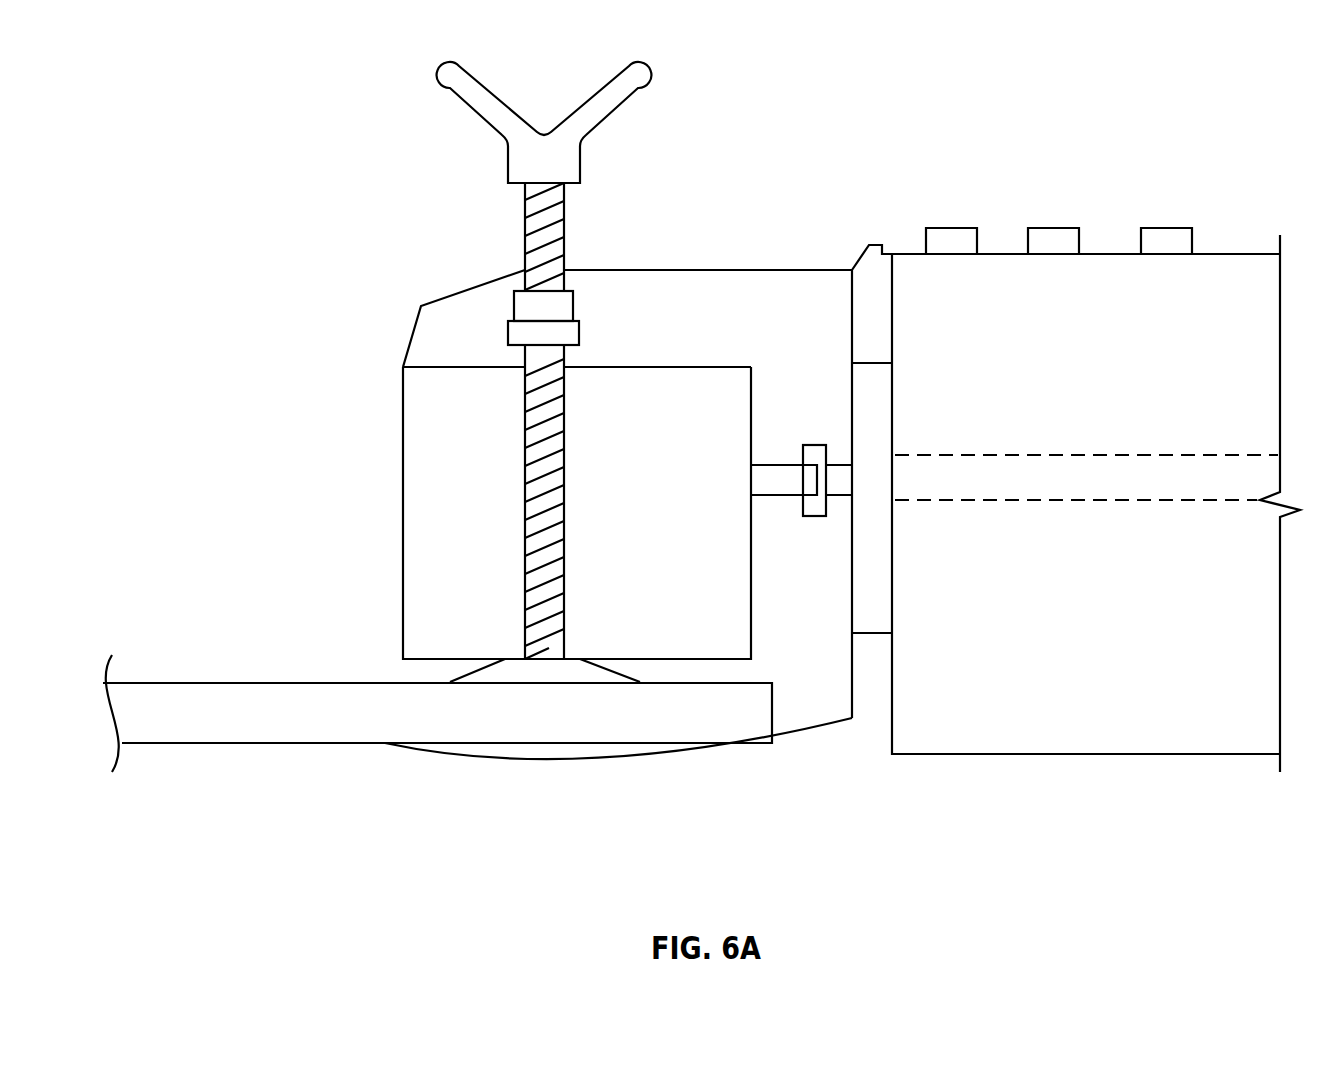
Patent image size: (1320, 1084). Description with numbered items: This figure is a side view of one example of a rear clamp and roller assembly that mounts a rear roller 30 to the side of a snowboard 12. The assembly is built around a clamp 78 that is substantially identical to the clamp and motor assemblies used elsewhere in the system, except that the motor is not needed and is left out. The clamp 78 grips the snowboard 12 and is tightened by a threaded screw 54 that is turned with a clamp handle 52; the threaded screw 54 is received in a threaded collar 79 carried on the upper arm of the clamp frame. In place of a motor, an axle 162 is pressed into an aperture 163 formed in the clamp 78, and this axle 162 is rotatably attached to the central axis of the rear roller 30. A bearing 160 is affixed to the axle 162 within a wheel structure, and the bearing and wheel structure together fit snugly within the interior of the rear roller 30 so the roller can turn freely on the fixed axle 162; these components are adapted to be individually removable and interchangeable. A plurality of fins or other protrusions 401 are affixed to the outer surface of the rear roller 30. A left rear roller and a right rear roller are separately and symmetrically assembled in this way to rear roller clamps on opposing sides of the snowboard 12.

The snowboard 12 is at (253, 723).
The rear roller 30 is at (990, 272).
The clamp handle 52 is at (638, 73).
The threaded screw 54 is at (565, 483).
The clamp 78 is at (627, 285).
The threaded collar 79 is at (462, 288).
The bearing 160 is at (820, 445).
The axle 162 is at (782, 495).
The aperture 163 is at (782, 480).
The fins or other protrusions 401 is at (1165, 228).